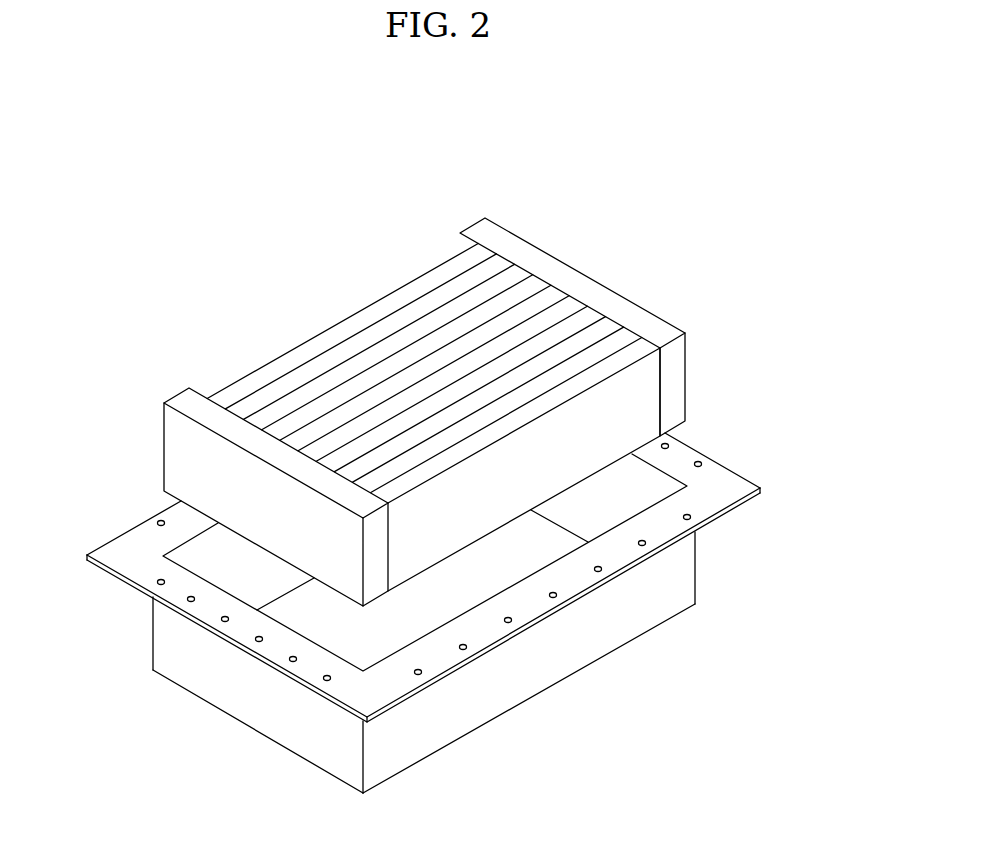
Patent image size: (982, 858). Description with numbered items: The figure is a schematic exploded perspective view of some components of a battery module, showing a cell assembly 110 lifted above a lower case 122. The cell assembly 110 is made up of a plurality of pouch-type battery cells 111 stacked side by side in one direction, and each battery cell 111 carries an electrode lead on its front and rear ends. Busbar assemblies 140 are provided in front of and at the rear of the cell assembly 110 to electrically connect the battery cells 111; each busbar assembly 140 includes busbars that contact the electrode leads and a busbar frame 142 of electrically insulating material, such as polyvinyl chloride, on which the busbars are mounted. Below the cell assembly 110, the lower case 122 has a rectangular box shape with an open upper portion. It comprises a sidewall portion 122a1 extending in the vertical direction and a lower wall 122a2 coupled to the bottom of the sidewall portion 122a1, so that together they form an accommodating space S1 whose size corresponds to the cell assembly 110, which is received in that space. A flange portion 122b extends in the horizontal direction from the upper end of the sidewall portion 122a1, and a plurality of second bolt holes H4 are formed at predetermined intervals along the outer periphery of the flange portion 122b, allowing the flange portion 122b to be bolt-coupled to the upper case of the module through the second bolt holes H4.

The cell assembly 110 is at (384, 393).
The battery cell 111 is at (424, 304).
The busbar assembly 140 is at (384, 393).
The busbar frame 142 is at (178, 394).
The lower case 122 is at (436, 604).
The sidewall portion 122a1 is at (673, 575).
The lower wall 122a2 is at (683, 612).
The flange portion 122b is at (727, 488).
The second bolt hole H4 is at (645, 543).
The accommodating space S1 is at (473, 565).